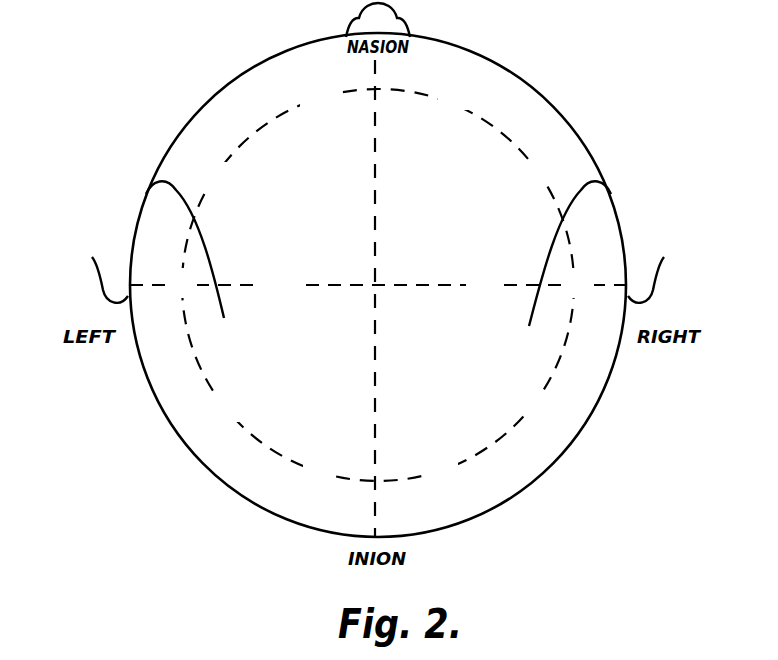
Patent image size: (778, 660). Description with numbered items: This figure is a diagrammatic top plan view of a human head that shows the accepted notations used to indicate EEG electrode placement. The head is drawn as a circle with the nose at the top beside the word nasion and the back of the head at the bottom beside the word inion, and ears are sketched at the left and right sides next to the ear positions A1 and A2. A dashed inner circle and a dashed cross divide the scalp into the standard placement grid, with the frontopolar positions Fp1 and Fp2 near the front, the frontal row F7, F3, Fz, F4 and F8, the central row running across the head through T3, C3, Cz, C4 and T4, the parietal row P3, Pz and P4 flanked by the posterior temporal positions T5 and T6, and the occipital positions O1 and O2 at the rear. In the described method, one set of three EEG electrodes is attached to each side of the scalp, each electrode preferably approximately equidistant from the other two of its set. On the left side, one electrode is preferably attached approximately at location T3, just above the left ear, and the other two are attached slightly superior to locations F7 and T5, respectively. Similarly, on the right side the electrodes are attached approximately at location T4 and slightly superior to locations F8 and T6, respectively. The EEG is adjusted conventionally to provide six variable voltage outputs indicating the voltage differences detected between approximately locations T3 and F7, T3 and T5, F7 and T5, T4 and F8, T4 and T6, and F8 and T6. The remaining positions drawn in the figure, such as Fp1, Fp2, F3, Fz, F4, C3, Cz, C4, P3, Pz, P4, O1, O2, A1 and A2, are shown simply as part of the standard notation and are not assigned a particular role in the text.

The left frontopolar electrode position Fp1 is at (323, 96).
The right frontopolar electrode position Fp2 is at (461, 96).
The location F7 is at (225, 174).
The left frontal electrode position F3 is at (300, 192).
The midline frontal electrode position Fz is at (380, 192).
The right frontal electrode position F4 is at (463, 192).
The location F8 is at (543, 172).
The left ear reference electrode A1 is at (75, 278).
The location T3 is at (184, 286).
The left central electrode position C3 is at (277, 288).
The vertex electrode position Cz is at (376, 288).
The right central electrode position C4 is at (483, 288).
The location T4 is at (581, 286).
The right ear reference electrode A2 is at (685, 276).
The location T5 is at (228, 408).
The left parietal electrode position P3 is at (295, 382).
The midline parietal electrode position Pz is at (380, 382).
The right parietal electrode position P4 is at (460, 382).
The location T6 is at (541, 406).
The left occipital electrode position O1 is at (322, 474).
The right occipital electrode position O2 is at (443, 474).